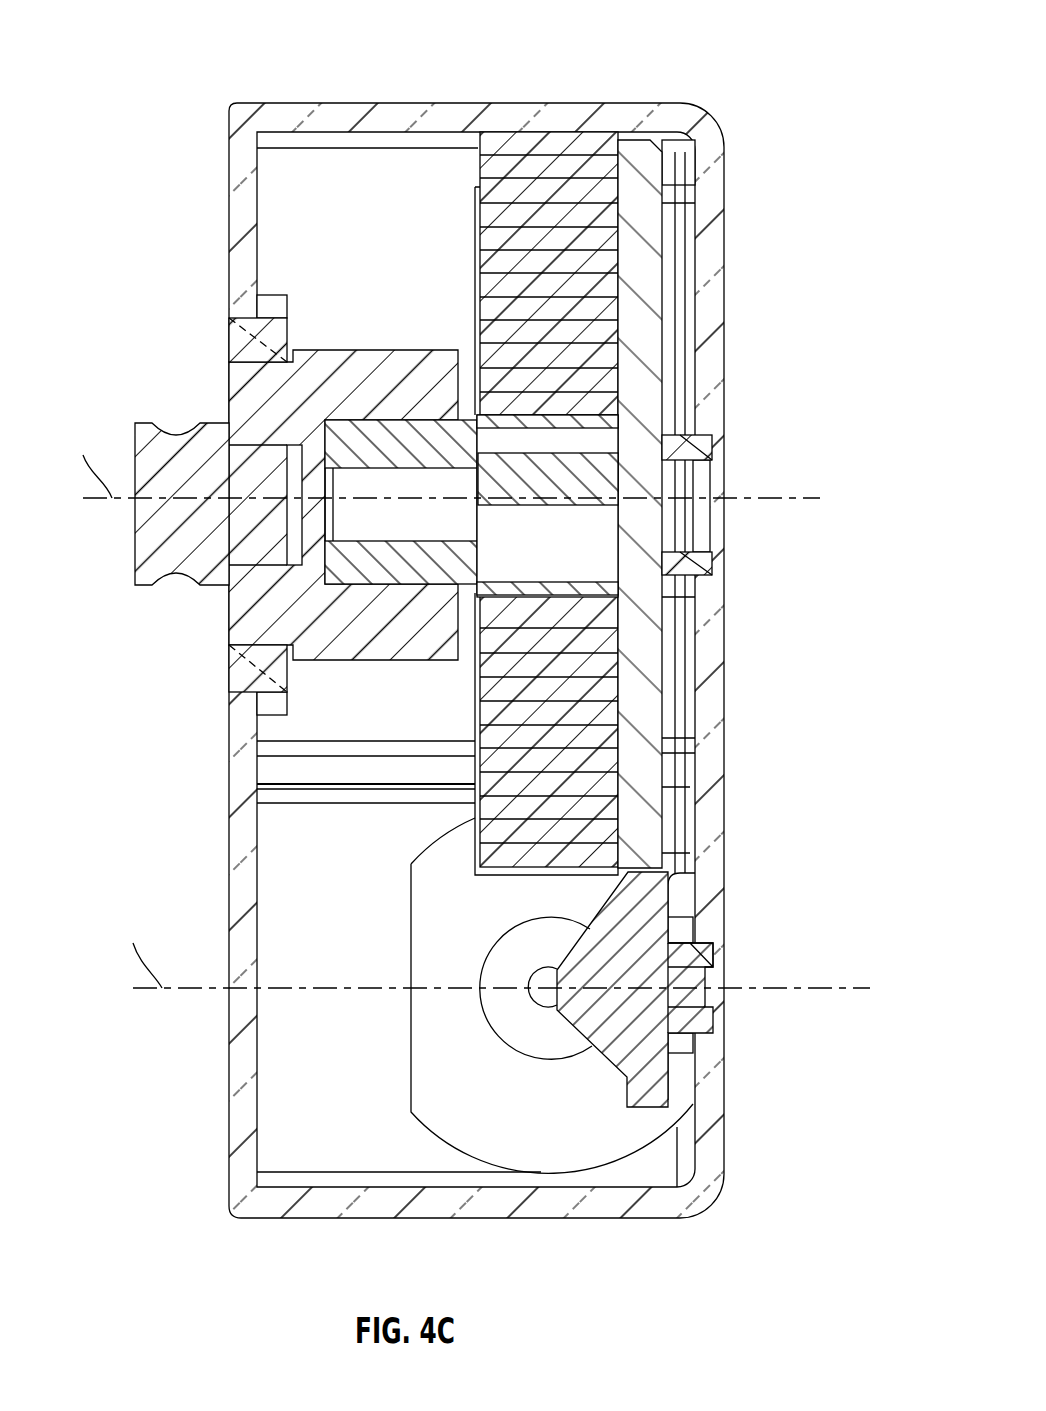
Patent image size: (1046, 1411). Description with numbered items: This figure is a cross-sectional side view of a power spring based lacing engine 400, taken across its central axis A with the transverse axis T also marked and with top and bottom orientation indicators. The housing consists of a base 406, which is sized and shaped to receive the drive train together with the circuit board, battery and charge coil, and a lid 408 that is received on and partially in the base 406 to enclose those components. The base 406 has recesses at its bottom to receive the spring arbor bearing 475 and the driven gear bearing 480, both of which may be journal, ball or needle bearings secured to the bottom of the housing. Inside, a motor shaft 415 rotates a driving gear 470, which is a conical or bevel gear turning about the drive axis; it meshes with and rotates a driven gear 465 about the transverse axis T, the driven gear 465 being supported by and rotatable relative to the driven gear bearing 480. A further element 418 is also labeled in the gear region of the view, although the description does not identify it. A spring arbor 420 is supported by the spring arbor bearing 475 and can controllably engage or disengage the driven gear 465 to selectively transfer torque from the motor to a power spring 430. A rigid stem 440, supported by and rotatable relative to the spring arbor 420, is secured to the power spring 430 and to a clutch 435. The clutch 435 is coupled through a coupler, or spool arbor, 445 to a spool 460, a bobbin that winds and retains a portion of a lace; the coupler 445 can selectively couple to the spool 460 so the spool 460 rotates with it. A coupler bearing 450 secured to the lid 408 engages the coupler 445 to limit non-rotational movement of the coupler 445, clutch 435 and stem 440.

The lacing engine 400 is at (728, 45).
The base 406 is at (537, 1208).
The lid 408 is at (237, 868).
The shaft 415 is at (519, 1015).
The cam surface 418 is at (630, 867).
The spring arbor 420 is at (638, 704).
The power spring 430 is at (467, 252).
The clutch 435 is at (363, 437).
The stem 440 is at (458, 513).
The coupler (spool arbor) 445 is at (260, 422).
The coupler bearing 450 is at (240, 672).
The spool 460 is at (133, 528).
The driven gear 465 is at (637, 968).
The driving gear 470 is at (528, 988).
The spring arbor bearing 475 is at (712, 452).
The driven gear bearing 480 is at (705, 955).